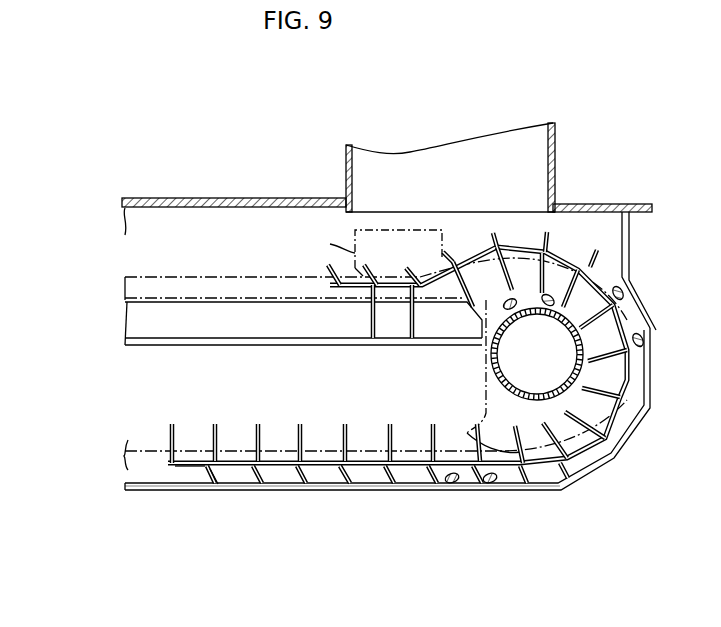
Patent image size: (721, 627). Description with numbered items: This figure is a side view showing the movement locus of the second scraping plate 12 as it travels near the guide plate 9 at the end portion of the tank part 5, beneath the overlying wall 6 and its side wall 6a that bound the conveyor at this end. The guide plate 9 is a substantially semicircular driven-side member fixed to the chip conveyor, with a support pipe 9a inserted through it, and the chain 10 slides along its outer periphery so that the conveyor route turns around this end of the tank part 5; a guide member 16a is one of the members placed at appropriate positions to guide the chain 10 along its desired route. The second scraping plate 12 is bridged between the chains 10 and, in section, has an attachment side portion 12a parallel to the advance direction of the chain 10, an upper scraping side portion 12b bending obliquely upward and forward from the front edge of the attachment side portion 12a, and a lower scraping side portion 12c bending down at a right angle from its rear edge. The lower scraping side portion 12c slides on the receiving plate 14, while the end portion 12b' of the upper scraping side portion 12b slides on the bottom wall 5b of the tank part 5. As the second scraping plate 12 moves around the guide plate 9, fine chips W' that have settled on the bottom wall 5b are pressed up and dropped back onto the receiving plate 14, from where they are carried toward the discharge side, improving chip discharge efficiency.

The tank part 5 is at (327, 500).
The bottom wall 5b is at (437, 492).
The wall 6 is at (201, 197).
The side wall 6a is at (556, 134).
The guide plate 9 is at (477, 410).
The support pipe 9a is at (490, 346).
The chain 10 is at (165, 272).
The second scraping plate 12 is at (455, 255).
The attachment side portion 12a is at (192, 469).
The upper scraping side portion 12b is at (387, 509).
The end portion 12b' is at (233, 525).
The lower scraping side portion 12c is at (168, 431).
The receiving plate 14 is at (262, 349).
The guide member 16a is at (340, 247).
The fine chips W' is at (568, 414).